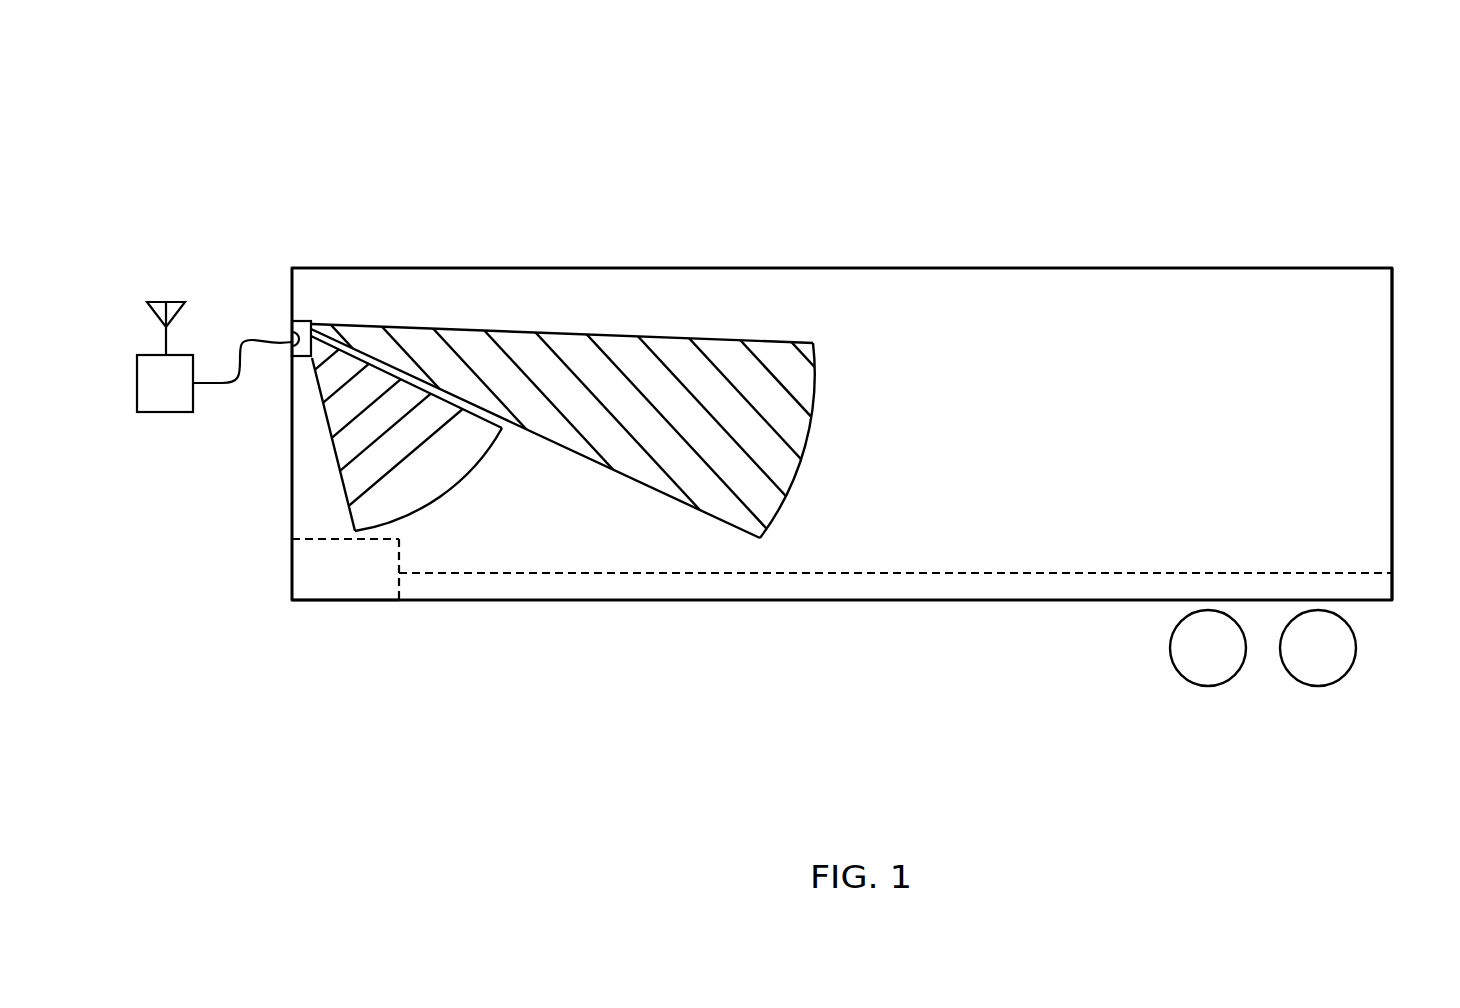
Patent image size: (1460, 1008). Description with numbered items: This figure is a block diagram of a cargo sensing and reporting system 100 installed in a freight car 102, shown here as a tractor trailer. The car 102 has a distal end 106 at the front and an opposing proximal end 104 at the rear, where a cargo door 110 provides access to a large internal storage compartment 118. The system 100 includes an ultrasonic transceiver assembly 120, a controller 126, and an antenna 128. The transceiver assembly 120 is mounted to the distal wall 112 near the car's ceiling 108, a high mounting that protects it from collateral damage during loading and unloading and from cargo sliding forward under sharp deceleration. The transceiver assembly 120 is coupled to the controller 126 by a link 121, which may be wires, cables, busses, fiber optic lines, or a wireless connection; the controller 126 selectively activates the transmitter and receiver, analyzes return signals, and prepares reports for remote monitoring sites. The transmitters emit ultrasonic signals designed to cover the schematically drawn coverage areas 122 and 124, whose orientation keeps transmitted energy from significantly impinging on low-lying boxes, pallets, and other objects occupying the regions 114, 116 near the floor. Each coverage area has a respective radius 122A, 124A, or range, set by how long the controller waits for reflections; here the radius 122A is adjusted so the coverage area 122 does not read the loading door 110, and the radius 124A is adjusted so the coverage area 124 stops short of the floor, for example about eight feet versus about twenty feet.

The cargo sensing and reporting system 100 is at (771, 374).
The freight car 102 is at (843, 440).
The proximal end 104 is at (1414, 396).
The distal end 106 is at (274, 396).
The ceiling 108 is at (1157, 270).
The cargo door 110 is at (1393, 404).
The distal wall 112 is at (292, 557).
The region 114 is at (352, 587).
The region 116 is at (585, 578).
The internal storage compartment 118 is at (922, 448).
The ultrasonic transceiver assembly 120 is at (292, 331).
The link 121 is at (214, 388).
The coverage area 122 is at (650, 421).
The radius 122A is at (786, 497).
The coverage area 124 is at (434, 371).
The radius 124A is at (413, 512).
The controller 126 is at (168, 413).
The antenna 128 is at (152, 316).